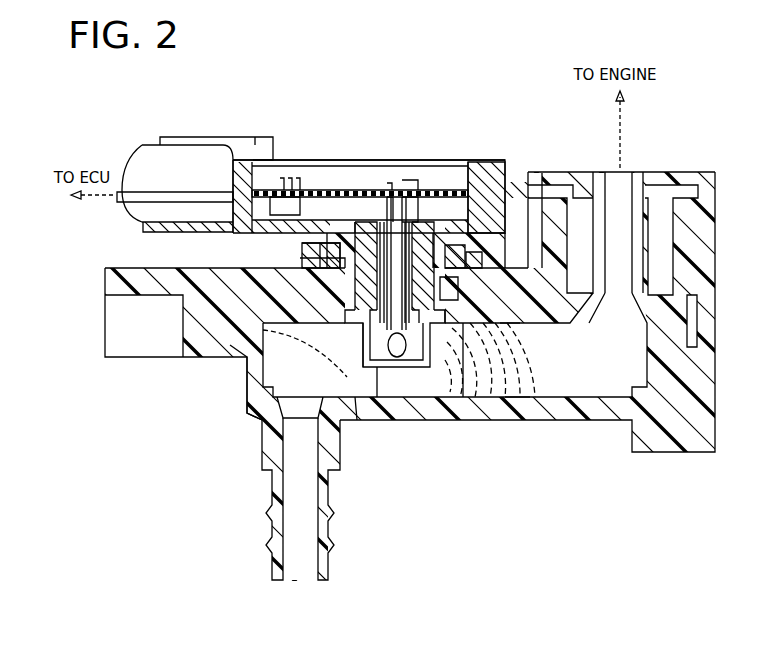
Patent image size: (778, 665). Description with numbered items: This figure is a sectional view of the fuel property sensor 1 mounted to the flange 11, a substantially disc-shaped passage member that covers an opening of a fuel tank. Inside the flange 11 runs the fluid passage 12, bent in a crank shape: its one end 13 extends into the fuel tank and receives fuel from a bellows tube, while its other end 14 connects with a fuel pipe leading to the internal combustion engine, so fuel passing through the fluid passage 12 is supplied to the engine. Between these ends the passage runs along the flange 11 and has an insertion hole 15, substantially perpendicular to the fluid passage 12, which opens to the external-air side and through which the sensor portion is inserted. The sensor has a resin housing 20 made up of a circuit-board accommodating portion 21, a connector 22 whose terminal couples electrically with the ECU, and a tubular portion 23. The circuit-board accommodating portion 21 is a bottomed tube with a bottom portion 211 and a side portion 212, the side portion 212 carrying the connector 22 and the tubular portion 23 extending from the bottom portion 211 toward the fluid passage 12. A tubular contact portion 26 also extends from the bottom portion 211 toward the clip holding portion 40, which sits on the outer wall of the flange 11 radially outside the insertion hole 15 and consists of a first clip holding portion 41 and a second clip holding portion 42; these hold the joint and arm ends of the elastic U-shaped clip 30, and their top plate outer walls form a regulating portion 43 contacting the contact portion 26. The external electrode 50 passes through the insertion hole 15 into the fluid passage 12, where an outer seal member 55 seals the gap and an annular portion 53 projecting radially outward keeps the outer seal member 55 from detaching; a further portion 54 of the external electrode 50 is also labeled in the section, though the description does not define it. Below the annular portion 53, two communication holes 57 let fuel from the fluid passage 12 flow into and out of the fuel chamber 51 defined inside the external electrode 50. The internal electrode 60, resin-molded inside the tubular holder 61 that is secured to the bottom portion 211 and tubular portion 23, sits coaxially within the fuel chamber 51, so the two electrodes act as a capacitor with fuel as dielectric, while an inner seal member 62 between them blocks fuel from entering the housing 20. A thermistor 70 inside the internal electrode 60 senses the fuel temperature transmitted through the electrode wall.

The fuel property sensor 1 is at (320, 104).
The flange 11 is at (140, 284).
The fluid passage 12 is at (590, 375).
The one end of fluid passage 13 is at (290, 578).
The other end of fluid passage 14 is at (628, 175).
The insertion hole 15 is at (247, 410).
The housing 20 is at (402, 178).
The circuit-board accommodating portion 21 is at (353, 178).
The connector 22 is at (141, 150).
The tubular portion 23 is at (345, 332).
The contact portion 26 is at (312, 247).
The clip 30 is at (300, 262).
The clip holding portion 40 is at (403, 261).
The first clip holding portion 41 is at (233, 347).
The second clip holding portion 42 is at (482, 262).
The regulating portion 43 is at (500, 224).
The external electrode 50 is at (434, 400).
The fuel chamber 51 is at (377, 400).
The annular portion 53 is at (504, 380).
The passage portion 54 is at (460, 392).
The outer seal member 55 is at (516, 400).
The communication holes 57 is at (358, 417).
The internal electrode 60 is at (387, 188).
The holder 61 is at (430, 215).
The inner seal member 62 is at (491, 385).
The thermistor 70 is at (415, 392).
The bottom portion 211 is at (306, 182).
The side portion 212 is at (215, 137).